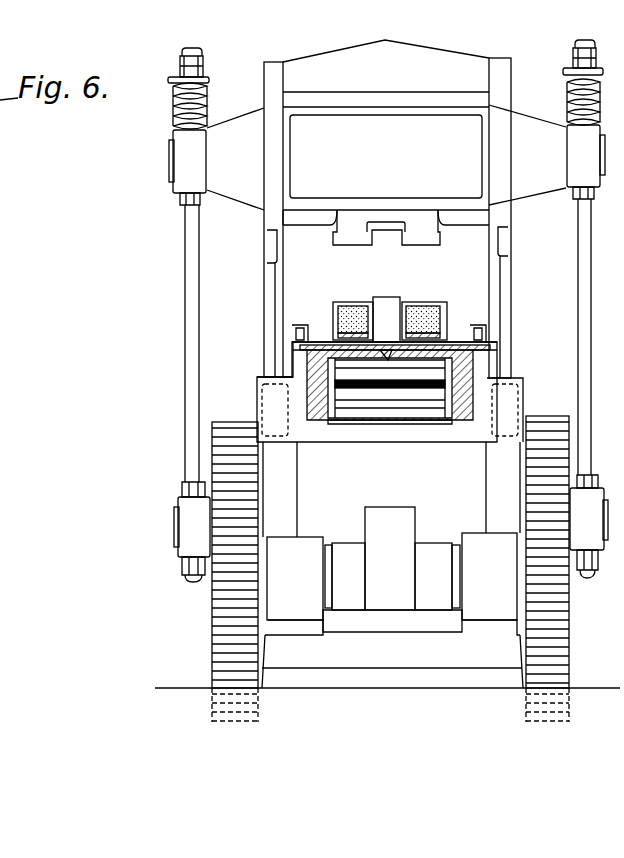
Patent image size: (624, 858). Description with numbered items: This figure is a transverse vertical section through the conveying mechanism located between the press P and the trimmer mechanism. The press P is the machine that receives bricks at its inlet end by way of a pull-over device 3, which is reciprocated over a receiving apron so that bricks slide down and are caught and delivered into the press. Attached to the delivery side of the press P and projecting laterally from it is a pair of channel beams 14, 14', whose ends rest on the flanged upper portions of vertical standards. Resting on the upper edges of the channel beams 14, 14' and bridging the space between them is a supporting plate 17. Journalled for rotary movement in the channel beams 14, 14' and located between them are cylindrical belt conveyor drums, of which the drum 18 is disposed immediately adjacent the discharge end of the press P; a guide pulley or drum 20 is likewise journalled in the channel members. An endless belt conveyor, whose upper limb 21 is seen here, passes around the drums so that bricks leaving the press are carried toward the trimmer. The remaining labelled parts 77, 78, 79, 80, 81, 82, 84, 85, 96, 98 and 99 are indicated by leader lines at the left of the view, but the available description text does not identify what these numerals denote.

The pull-over device 3 is at (400, 298).
The channel beam 14 is at (409, 383).
The channel beam 14' is at (254, 360).
The supporting plate 17 is at (425, 348).
The belt conveyor drum 18 is at (425, 420).
The guide pulley or drum 20 is at (362, 422).
The upper limb of endless belt conveyor 21 is at (360, 350).
The lever 77 is at (11, 459).
The link 78 is at (0, 418).
The rod 79 is at (0, 271).
The lever arm 80 is at (0, 336).
The pivot 81 is at (0, 318).
The bar 82 is at (0, 292).
The shaft 84 is at (0, 262).
The arm 85 is at (0, 168).
The link 96 is at (0, 248).
The connection 98 is at (0, 215).
The lever 99 is at (0, 190).
The press P is at (250, 263).